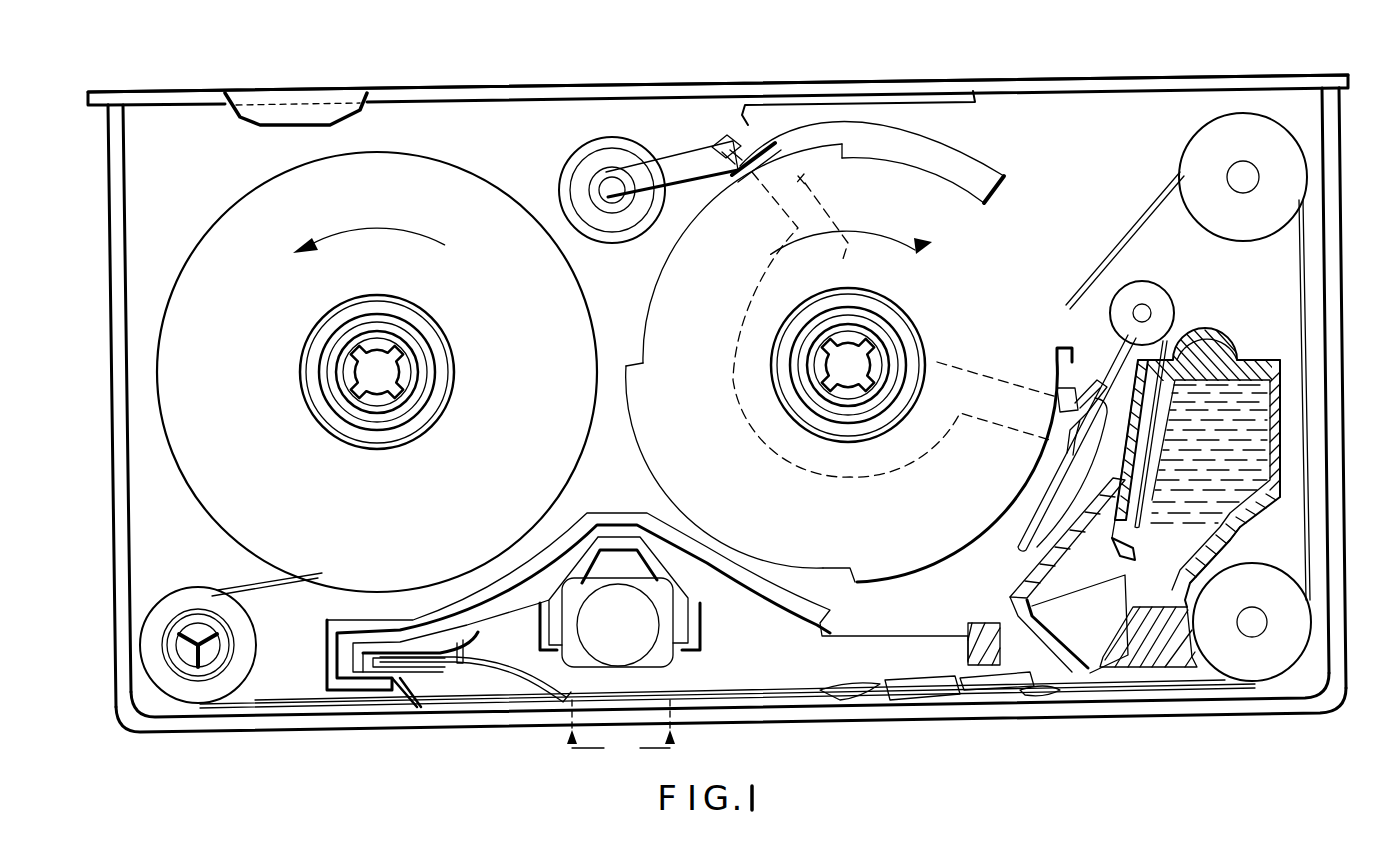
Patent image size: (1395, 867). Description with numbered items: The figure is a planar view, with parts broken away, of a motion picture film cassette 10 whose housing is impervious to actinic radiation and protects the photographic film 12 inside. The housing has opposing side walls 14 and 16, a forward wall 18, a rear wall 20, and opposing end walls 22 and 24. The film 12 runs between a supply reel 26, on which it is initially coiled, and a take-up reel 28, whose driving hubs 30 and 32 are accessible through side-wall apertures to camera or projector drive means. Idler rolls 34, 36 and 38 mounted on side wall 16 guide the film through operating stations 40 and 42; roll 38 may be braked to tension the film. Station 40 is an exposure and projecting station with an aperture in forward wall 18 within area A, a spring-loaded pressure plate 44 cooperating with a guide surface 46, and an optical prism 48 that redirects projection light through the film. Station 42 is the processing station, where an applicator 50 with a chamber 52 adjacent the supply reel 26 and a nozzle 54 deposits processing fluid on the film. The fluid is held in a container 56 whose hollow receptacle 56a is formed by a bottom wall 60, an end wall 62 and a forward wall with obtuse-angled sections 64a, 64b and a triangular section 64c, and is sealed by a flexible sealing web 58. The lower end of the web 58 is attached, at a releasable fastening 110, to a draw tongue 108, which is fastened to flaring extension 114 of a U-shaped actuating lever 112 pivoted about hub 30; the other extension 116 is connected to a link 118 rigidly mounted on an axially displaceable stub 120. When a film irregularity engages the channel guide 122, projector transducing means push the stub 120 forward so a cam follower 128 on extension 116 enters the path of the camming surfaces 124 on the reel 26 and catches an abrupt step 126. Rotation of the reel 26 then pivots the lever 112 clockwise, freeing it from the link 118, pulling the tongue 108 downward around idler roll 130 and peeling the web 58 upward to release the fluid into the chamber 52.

The motion picture film cassette 10 is at (181, 88).
The photographic film 12 is at (298, 698).
The side wall 14 is at (300, 115).
The side wall 16 is at (431, 131).
The forward wall 18 is at (312, 733).
The rear wall 20 is at (437, 91).
The end wall 22 is at (109, 366).
The end wall 24 is at (1343, 345).
The supply reel 26 is at (988, 318).
The take-up reel 28 is at (503, 344).
The driving hub 30 is at (872, 365).
The driving hub 32 is at (400, 372).
The idler roll 34 is at (1229, 221).
The idler roll 36 is at (1238, 666).
The idler roll 38 is at (182, 701).
The operating station 40 is at (538, 682).
The operating station 42 is at (1128, 703).
The pressure plate 44 is at (742, 662).
The guide surface 46 is at (543, 708).
The optical prism 48 is at (670, 656).
The applicator 50 is at (1012, 576).
The chamber 52 is at (1065, 646).
The nozzle 54 is at (1082, 654).
The container 56 is at (1248, 463).
The hollow receptacle 56a is at (1216, 356).
The sealing web 58 is at (1154, 427).
The bottom wall 60 is at (1272, 420).
The end wall 62 is at (1258, 364).
The forward wall first section 64a is at (1243, 530).
The forward wall section 64b is at (1153, 524).
The forward wall section 64c is at (1200, 578).
The draw tongue 108 is at (1168, 340).
The releasable fastening 110 is at (1122, 548).
The actuating lever 112 is at (832, 470).
The flaring extension 114 is at (1098, 402).
The flaring extension 116 is at (818, 184).
The link 118 is at (696, 162).
The stub 120 is at (620, 176).
The channel guide 122 is at (920, 696).
The camming surfaces 124 is at (664, 270).
The abrupt step 126 is at (845, 150).
The cam follower 128 is at (732, 176).
The idler roll 130 is at (1158, 300).
The area A is at (621, 730).